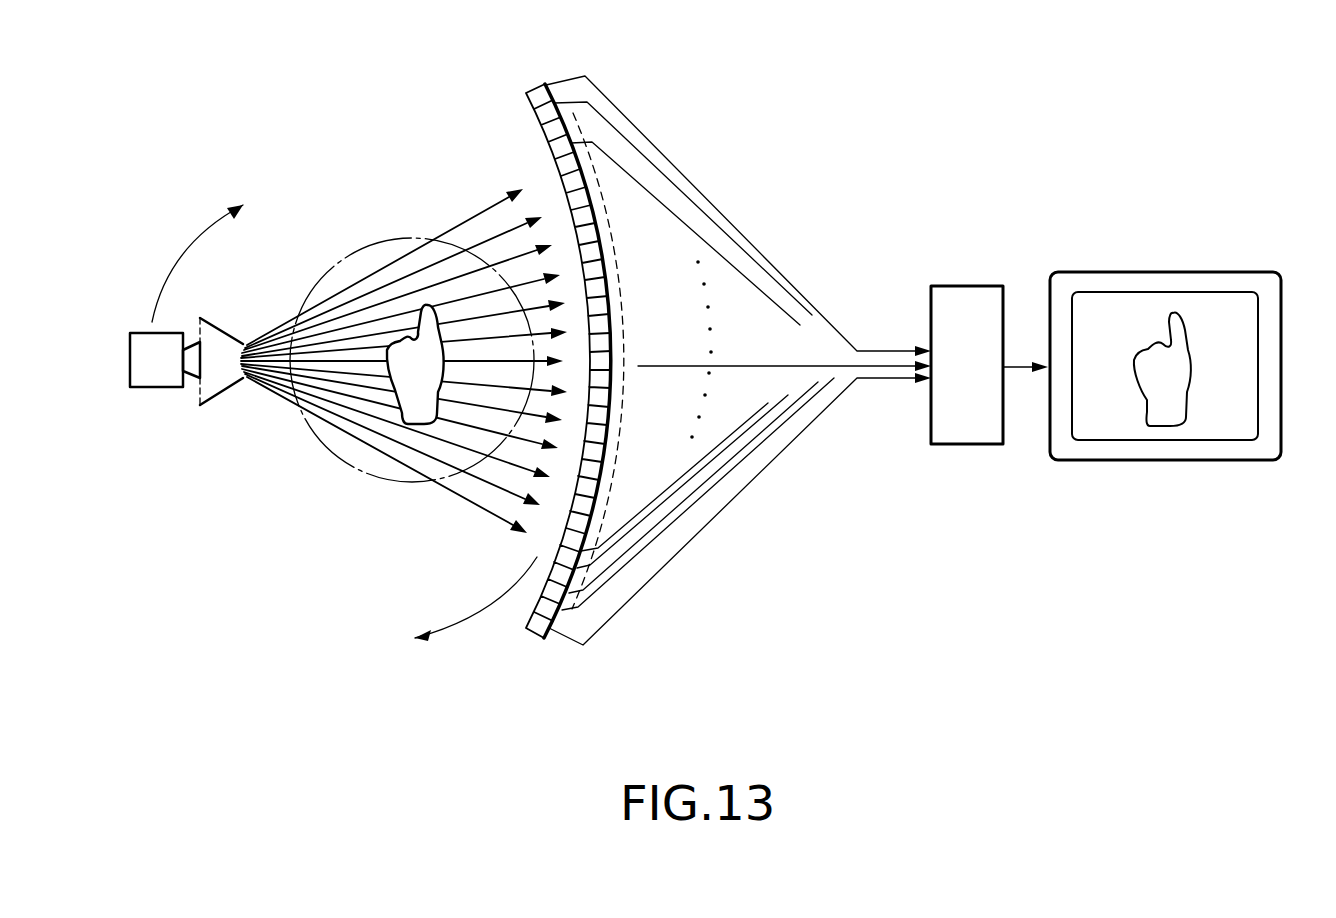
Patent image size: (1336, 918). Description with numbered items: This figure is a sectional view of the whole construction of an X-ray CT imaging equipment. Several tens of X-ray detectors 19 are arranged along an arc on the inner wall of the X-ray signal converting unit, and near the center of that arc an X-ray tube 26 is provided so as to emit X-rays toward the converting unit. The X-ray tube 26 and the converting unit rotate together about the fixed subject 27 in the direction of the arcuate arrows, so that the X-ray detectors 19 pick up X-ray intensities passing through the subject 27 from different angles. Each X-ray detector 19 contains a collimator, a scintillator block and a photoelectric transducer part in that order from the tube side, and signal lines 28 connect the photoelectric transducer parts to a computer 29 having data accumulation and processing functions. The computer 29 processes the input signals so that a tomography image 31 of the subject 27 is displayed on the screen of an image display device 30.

The X-ray detector 19 is at (526, 86).
The X-ray tube 26 is at (153, 388).
The subject 27 is at (395, 337).
The signal lines 28 is at (753, 242).
The computer 29 is at (965, 444).
The image display device 30 is at (1143, 303).
The tomography image 31 is at (1165, 426).